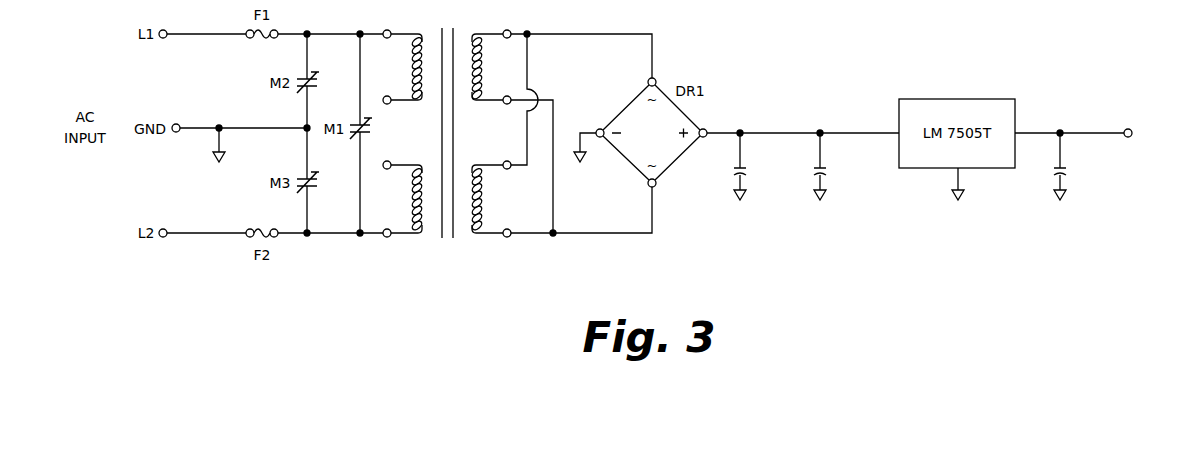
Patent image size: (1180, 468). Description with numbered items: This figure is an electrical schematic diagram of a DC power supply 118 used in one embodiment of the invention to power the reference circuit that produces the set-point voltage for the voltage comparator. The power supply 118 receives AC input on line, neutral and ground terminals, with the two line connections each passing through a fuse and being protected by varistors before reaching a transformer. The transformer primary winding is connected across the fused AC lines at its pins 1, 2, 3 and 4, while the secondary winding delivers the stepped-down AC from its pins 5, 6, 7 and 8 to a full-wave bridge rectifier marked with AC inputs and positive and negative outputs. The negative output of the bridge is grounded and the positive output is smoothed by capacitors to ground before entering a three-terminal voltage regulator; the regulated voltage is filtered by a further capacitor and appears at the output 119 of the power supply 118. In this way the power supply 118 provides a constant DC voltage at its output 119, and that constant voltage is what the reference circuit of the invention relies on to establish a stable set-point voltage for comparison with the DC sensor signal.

The power supply 118 is at (490, 268).
The output 119 is at (1133, 130).
The transformer primary pin 1 is at (387, 23).
The transformer primary pin 2 is at (387, 89).
The transformer primary pin 3 is at (387, 177).
The transformer primary pin 4 is at (387, 245).
The transformer secondary pin 5 is at (507, 23).
The transformer secondary pin 6 is at (507, 89).
The transformer secondary pin 7 is at (507, 245).
The transformer secondary pin 8 is at (507, 177).